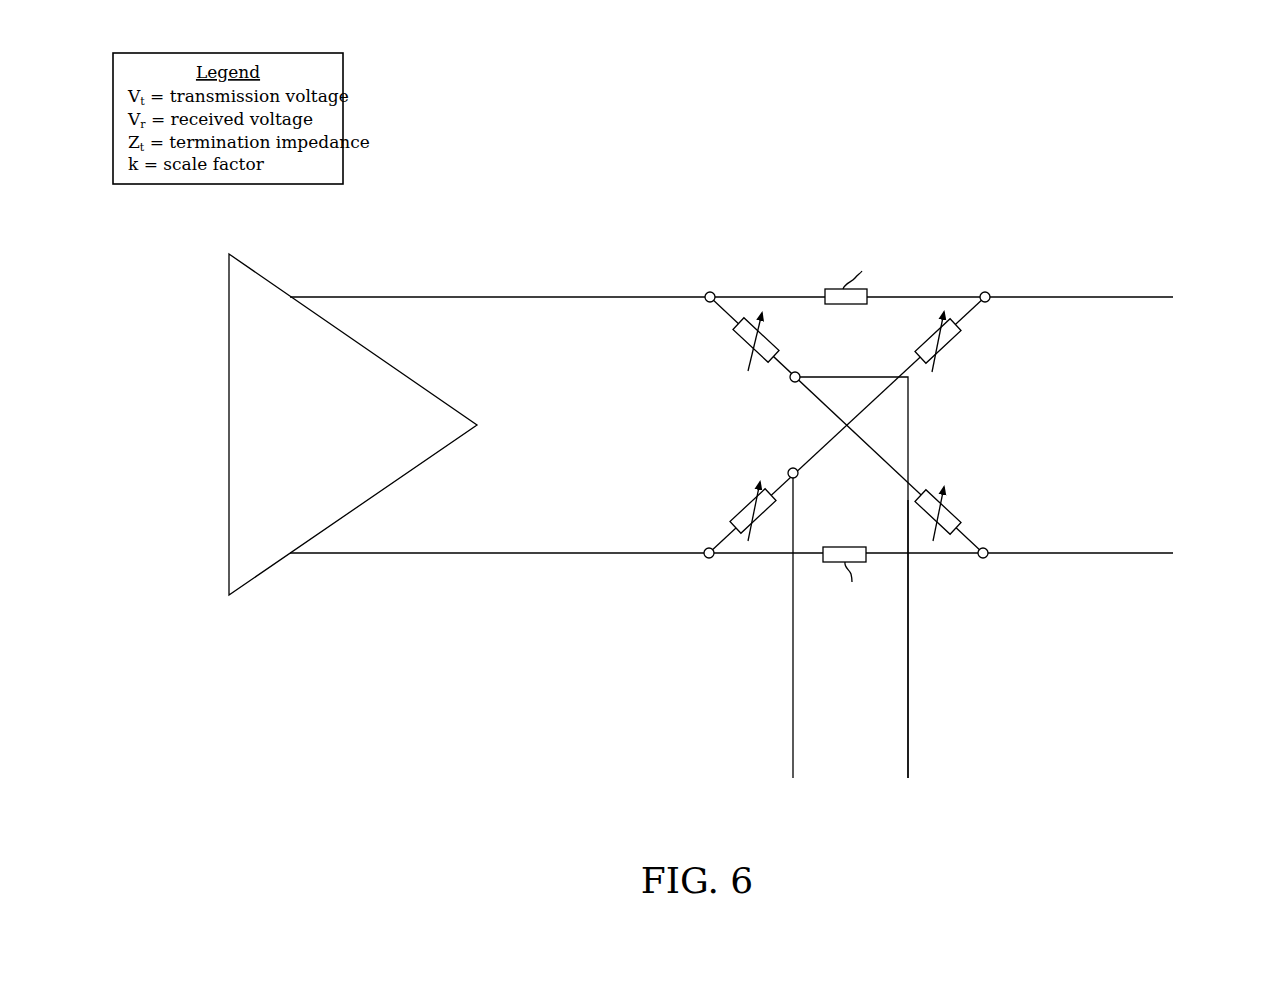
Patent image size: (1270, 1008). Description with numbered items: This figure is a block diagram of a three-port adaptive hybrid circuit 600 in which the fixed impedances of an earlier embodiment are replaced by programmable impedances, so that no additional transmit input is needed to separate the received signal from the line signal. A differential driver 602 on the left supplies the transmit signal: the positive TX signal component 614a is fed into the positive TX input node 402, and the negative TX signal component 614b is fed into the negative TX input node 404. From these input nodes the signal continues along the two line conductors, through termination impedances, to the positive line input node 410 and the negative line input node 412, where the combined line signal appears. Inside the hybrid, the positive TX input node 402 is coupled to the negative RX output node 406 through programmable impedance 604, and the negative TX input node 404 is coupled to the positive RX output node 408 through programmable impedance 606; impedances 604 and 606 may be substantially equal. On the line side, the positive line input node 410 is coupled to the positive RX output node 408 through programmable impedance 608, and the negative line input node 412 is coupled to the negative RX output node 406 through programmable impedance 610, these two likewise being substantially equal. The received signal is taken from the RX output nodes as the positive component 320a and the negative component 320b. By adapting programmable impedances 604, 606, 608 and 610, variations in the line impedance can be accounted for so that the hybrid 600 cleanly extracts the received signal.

The adaptive hybrid circuit 600 is at (1067, 664).
The differential amplifier 602 is at (255, 265).
The positive TX signal component 614a is at (543, 296).
The negative TX signal component 614b is at (538, 555).
The positive TX input node 402 is at (712, 292).
The negative TX input node 404 is at (710, 558).
The negative RX output node 406 is at (797, 374).
The positive RX output node 408 is at (795, 479).
The positive line input node 410 is at (987, 292).
The negative line input node 412 is at (985, 549).
The programmable impedance 604 is at (740, 345).
The programmable impedance 606 is at (742, 510).
The programmable impedance 608 is at (945, 350).
The programmable impedance 610 is at (948, 508).
The positive component of the RX output signal 320a is at (908, 643).
The negative component of the RX output signal 320b is at (792, 645).